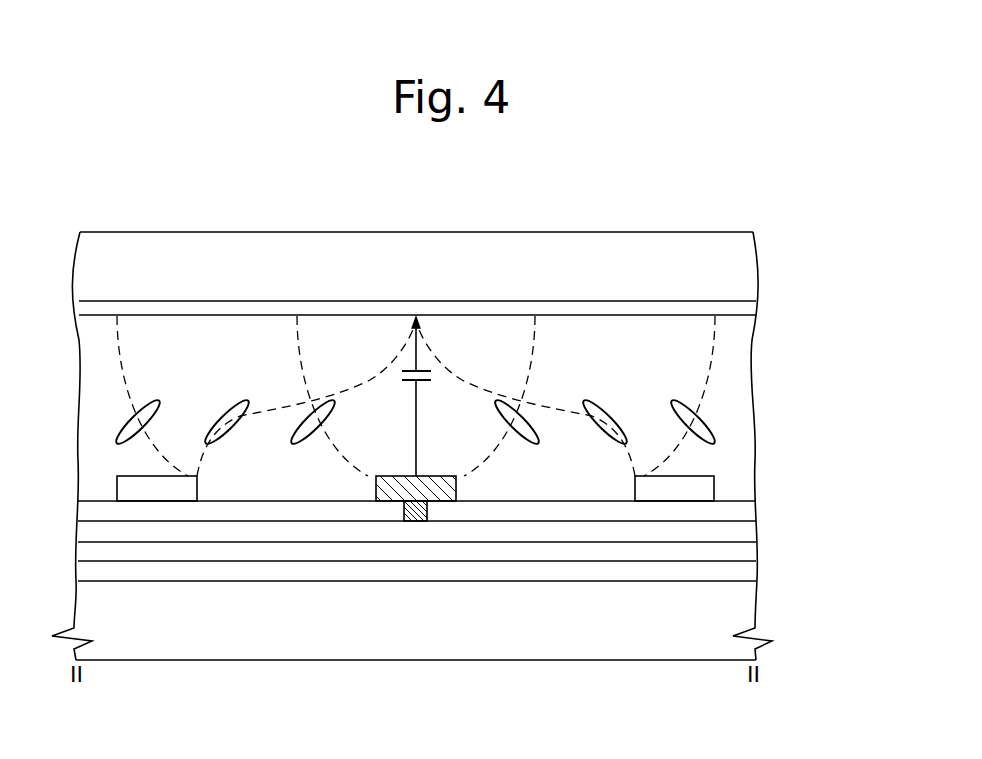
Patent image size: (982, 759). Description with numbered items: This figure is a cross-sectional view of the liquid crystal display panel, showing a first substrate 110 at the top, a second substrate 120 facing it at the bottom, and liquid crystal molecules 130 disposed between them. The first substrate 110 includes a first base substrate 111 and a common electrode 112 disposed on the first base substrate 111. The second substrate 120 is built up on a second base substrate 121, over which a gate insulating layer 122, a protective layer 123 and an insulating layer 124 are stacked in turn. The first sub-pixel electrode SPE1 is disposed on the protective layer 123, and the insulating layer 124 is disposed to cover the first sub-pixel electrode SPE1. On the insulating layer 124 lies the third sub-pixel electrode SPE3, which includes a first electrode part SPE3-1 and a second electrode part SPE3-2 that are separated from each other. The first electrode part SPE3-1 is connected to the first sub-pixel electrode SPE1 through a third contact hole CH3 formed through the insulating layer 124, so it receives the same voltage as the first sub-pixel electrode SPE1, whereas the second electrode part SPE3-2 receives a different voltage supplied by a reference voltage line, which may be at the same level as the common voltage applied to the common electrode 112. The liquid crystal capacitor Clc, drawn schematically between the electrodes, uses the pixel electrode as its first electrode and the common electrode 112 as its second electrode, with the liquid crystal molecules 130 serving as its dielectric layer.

The first substrate 110 is at (486, 286).
The first base substrate 111 is at (745, 258).
The common electrode 112 is at (745, 308).
The liquid crystal molecules 130 is at (710, 427).
The second substrate 120 is at (485, 559).
The insulating layer 124 is at (745, 510).
The protective layer 123 is at (745, 551).
The gate insulating layer 122 is at (745, 572).
The second base substrate 121 is at (789, 606).
The first sub-pixel electrode SPE1 is at (257, 531).
The third contact hole CH3 is at (417, 522).
The third sub-pixel electrode SPE3 is at (535, 617).
The first electrode part SPE3-1 is at (457, 487).
The second electrode part SPE3-2 is at (633, 487).
The liquid crystal capacitor Clc is at (425, 396).